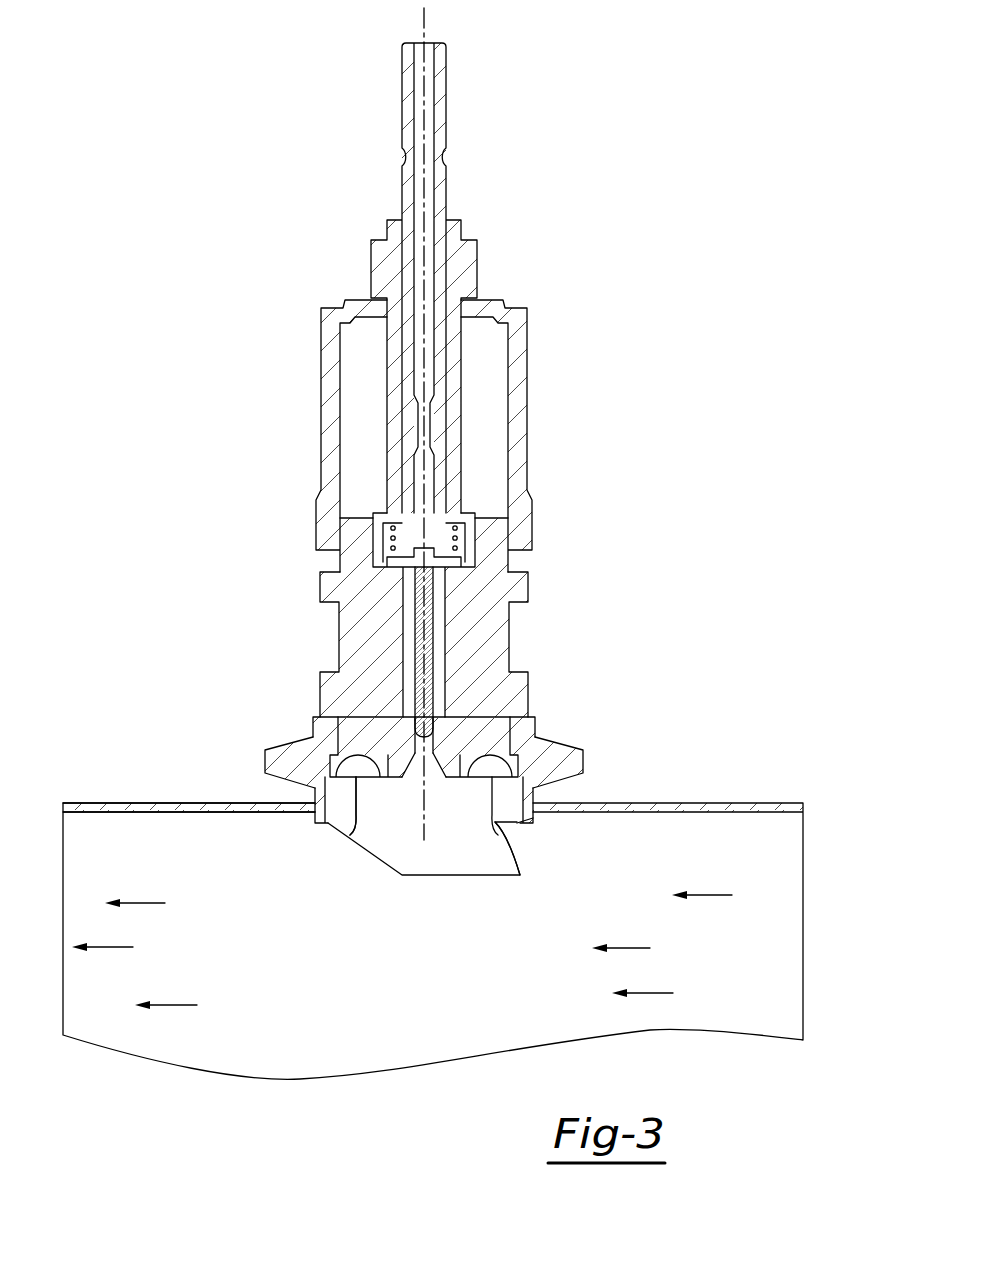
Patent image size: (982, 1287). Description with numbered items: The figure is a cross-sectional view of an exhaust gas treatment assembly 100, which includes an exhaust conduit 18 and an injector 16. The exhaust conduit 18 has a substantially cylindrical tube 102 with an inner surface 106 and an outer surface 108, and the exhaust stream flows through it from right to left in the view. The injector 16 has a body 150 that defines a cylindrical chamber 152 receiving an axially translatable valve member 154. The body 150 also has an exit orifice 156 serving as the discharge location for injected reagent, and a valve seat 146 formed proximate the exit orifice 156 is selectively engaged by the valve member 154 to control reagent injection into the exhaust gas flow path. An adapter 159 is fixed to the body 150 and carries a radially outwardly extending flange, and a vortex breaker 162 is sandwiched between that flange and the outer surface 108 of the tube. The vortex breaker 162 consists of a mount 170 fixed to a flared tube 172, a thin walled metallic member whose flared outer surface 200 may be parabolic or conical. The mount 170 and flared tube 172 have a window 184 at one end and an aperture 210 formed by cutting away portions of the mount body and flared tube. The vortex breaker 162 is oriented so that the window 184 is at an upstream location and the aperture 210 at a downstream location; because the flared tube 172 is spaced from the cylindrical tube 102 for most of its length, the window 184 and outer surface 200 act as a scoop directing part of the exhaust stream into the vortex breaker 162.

The injector 16 is at (560, 408).
The exhaust conduit 18 is at (665, 783).
The exhaust gas treatment assembly 100 is at (672, 483).
The cylindrical tube 102 is at (750, 804).
The inner surface 106 is at (178, 812).
The outer surface 108 is at (130, 803).
The valve seat 146 is at (425, 727).
The body 150 is at (527, 457).
The cylindrical chamber 152 is at (444, 608).
The valve member 154 is at (418, 628).
The exit orifice 156 is at (428, 757).
The adapter 159 is at (310, 735).
The vortex breaker 162 is at (588, 760).
The mount 170 is at (310, 800).
The flared tube 172 is at (442, 857).
The window 184 is at (518, 833).
The outer surface 200 is at (518, 860).
The aperture 210 is at (378, 850).